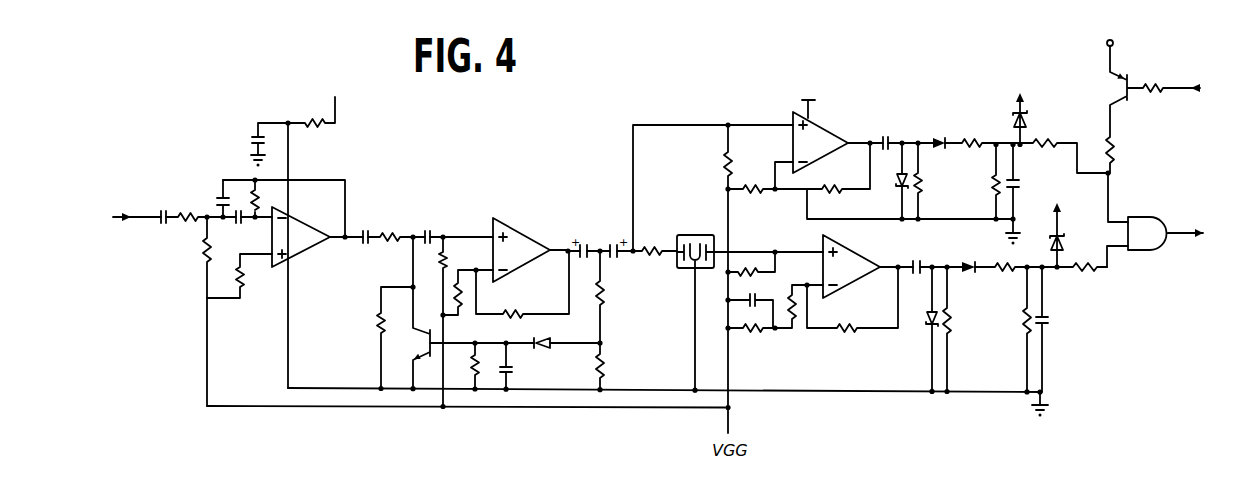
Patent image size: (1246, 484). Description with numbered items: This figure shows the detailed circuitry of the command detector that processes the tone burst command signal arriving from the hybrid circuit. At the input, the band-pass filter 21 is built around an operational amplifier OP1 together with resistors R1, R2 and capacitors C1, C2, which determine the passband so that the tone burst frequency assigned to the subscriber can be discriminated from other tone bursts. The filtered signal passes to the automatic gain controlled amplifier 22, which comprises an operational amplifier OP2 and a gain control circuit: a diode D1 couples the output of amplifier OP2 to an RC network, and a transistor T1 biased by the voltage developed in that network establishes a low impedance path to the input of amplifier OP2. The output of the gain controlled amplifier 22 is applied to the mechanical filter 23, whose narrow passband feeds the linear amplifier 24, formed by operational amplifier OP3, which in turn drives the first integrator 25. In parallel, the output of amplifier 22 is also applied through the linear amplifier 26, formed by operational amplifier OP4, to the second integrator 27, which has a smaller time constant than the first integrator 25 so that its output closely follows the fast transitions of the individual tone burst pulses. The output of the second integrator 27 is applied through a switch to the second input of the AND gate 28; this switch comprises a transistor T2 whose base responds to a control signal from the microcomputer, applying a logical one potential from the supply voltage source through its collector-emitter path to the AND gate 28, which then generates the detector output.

The band-pass filter 21 is at (385, 423).
The automatic gain controlled amplifier 22 is at (625, 423).
The mechanical filter 23 is at (693, 235).
The linear amplifier 24 is at (920, 423).
The first integrator 25 is at (1053, 423).
The linear amplifier 26 is at (867, 70).
The second integrator 27 is at (1055, 70).
The AND gate 28 is at (1143, 216).
The resistor R1 is at (191, 311).
The resistor R2 is at (267, 198).
The capacitor C1 is at (213, 198).
The capacitor C2 is at (237, 233).
The operational amplifier OP1 is at (299, 259).
The operational amplifier OP2 is at (523, 231).
The operational amplifier OP3 is at (848, 283).
The operational amplifier OP4 is at (822, 128).
The transistor T1 is at (424, 342).
The transistor T2 is at (1172, 97).
The diode D1 is at (540, 349).